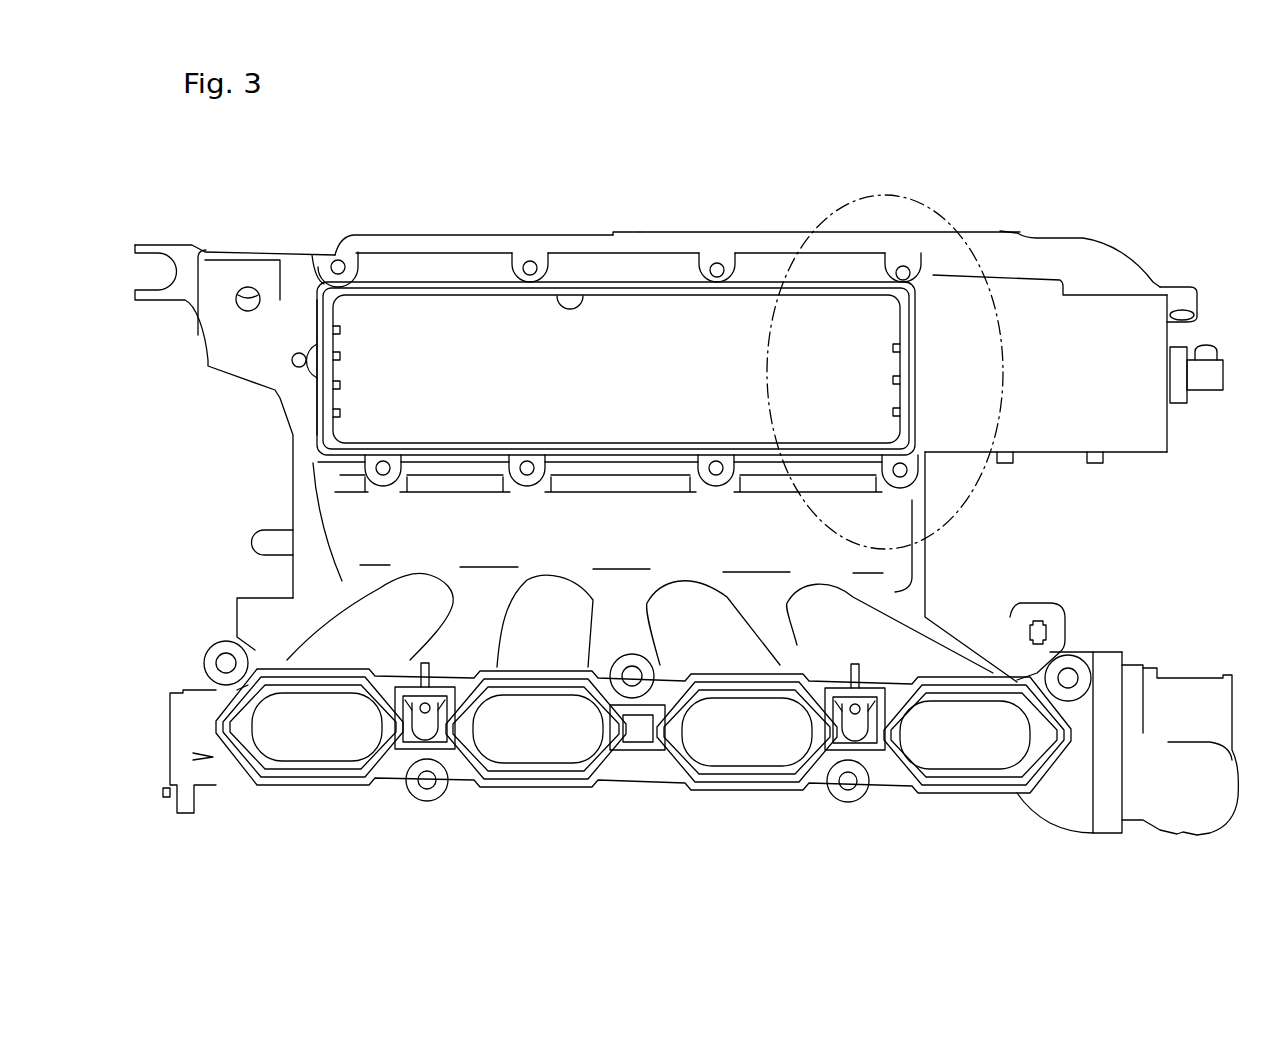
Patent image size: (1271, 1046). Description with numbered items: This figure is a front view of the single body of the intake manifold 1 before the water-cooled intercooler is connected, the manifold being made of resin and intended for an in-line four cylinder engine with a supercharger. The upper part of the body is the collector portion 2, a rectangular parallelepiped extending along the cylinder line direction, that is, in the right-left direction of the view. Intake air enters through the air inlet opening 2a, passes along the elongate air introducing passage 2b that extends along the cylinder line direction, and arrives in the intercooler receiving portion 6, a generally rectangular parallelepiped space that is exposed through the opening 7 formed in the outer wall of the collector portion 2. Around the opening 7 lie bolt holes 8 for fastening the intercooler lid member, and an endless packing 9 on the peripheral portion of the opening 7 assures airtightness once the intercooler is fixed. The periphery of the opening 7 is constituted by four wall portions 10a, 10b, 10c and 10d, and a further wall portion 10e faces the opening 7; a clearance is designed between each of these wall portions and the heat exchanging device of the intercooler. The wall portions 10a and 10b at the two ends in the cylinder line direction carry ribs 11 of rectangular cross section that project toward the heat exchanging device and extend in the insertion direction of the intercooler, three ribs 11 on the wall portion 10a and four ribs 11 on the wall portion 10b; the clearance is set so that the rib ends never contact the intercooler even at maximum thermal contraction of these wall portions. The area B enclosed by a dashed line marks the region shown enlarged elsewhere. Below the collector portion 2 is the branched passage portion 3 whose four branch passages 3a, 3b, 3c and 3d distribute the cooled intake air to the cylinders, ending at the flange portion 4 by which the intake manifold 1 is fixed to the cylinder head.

The intake manifold 1 is at (1157, 210).
The collector portion 2 is at (783, 228).
The air inlet opening 2a is at (1055, 457).
The air introducing passage 2b is at (617, 263).
The branched passage portion 3 is at (910, 598).
The branch passage 3a is at (345, 638).
The branch passage 3b is at (540, 657).
The branch passage 3c is at (713, 657).
The branch passage 3d is at (910, 657).
The flange portion 4 is at (287, 780).
The intercooler receiving portion 6 is at (493, 334).
The opening 7 is at (583, 310).
The bolt holes 8 is at (333, 260).
The endless packing 9 is at (320, 287).
The wall portion 10a is at (925, 302).
The wall portion 10b is at (318, 407).
The wall portion 10c is at (650, 282).
The wall portion 10d is at (612, 470).
The wall portion 10e is at (423, 352).
The ribs 11 is at (341, 331).
The area B is at (948, 217).